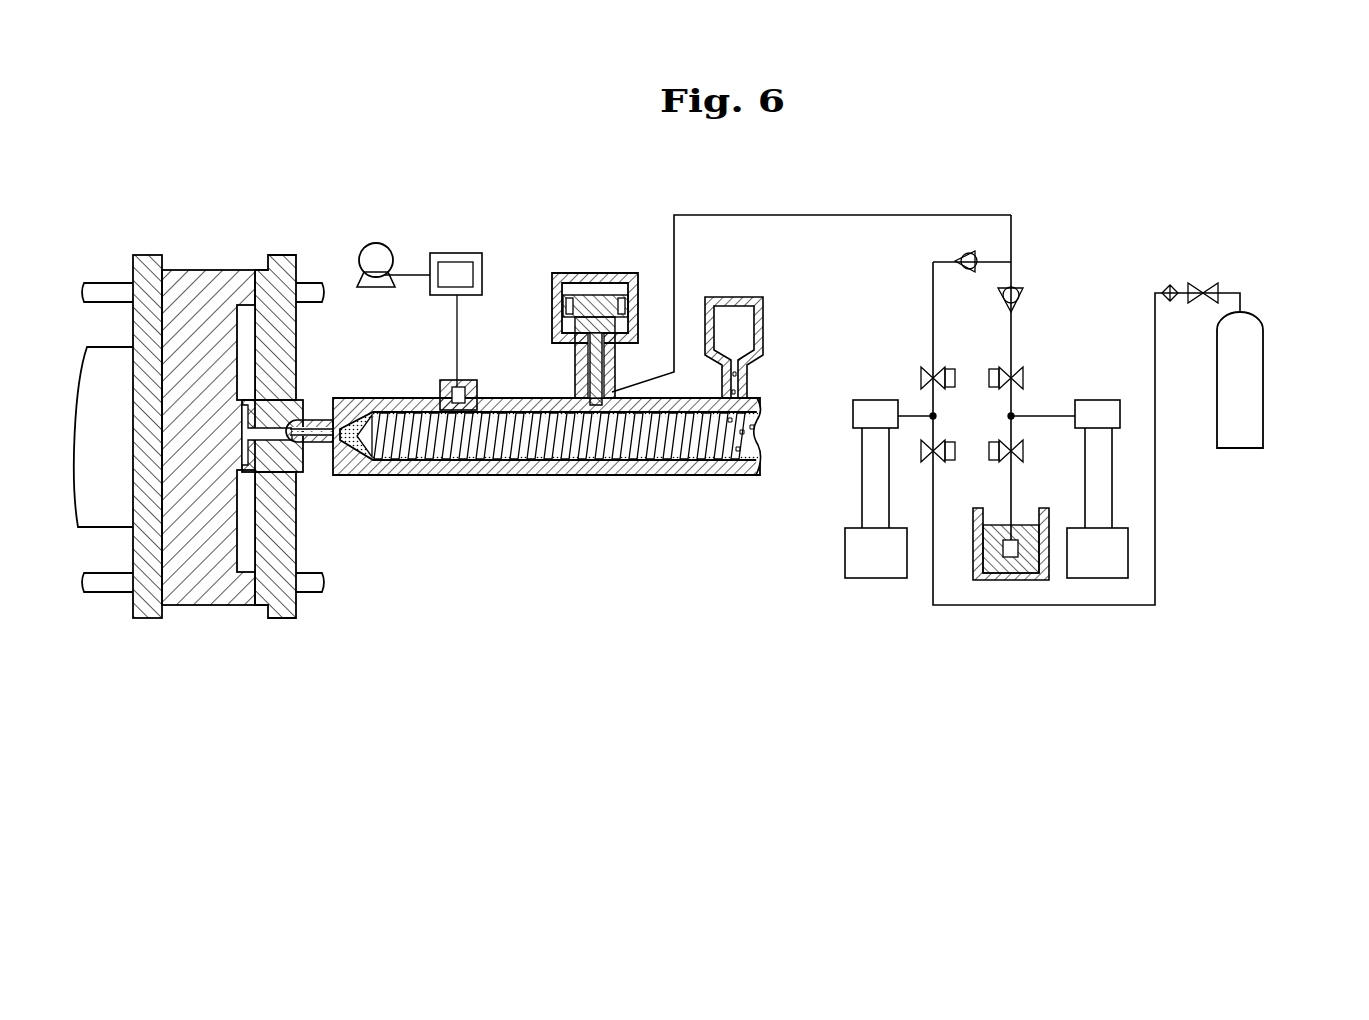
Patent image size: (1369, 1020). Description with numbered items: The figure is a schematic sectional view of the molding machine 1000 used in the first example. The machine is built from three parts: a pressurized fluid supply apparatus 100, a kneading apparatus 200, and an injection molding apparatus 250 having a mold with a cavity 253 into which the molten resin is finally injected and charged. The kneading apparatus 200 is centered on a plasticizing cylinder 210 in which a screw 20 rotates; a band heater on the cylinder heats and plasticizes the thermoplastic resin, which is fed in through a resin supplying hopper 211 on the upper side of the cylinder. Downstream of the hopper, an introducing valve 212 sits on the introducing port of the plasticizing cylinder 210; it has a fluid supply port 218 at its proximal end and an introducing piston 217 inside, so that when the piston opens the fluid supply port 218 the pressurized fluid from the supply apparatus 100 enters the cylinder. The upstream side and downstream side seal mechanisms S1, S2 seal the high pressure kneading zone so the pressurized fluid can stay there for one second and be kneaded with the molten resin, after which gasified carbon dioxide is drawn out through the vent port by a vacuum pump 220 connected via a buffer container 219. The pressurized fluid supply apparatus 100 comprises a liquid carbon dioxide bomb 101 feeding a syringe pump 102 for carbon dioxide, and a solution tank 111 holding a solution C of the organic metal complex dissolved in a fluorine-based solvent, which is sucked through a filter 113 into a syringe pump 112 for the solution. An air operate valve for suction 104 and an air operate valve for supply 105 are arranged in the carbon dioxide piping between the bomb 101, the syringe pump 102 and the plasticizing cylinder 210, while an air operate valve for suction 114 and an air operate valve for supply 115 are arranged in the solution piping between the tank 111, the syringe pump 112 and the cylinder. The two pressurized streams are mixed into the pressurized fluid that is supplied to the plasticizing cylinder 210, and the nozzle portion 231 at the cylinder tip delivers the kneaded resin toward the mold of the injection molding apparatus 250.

The molding machine 1000 is at (1142, 150).
The injection molding apparatus 250 is at (292, 703).
The cavity 253 is at (248, 552).
The nozzle 231 is at (313, 420).
The kneading apparatus 200 is at (765, 703).
The plasticizing cylinder 210 is at (370, 477).
The screw 20 is at (680, 452).
The upstream side seal mechanism S1 is at (614, 468).
The downstream side seal mechanism S2 is at (533, 468).
The vacuum pump 220 is at (378, 243).
The buffer container 219 is at (463, 253).
The introducing valve 212 is at (602, 272).
The introducing piston 217 is at (640, 271).
The fluid supply port 218 is at (612, 392).
The resin supplying hopper 211 is at (760, 297).
The pressurized fluid supply apparatus 100 is at (1262, 703).
The air operate valve for supply 105 is at (949, 368).
The air operate valve for suction 104 is at (949, 441).
The air operate valve for supply 115 is at (1000, 368).
The air operate valve for suction 114 is at (1000, 441).
The syringe pump for carbon dioxide 102 is at (853, 527).
The syringe pump for the solution 112 is at (1128, 527).
The solution tank 111 is at (975, 582).
The filter 113 is at (1020, 567).
The solution C is at (1003, 591).
The liquid carbon dioxide bomb 101 is at (1255, 312).